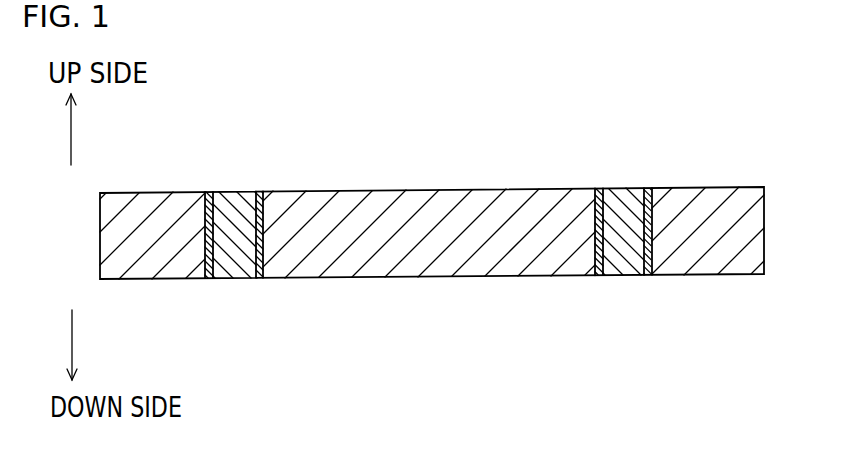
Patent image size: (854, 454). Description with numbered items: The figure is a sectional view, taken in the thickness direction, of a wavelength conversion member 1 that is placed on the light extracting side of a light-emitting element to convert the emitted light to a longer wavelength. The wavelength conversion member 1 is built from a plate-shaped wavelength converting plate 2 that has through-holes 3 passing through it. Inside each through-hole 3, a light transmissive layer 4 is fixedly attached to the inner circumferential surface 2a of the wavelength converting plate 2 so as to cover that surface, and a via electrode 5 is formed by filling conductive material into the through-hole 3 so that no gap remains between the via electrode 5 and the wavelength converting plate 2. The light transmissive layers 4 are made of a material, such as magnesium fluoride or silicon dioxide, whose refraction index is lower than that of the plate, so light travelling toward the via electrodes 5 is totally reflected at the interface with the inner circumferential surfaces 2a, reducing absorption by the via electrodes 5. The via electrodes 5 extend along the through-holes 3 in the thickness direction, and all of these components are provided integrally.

The wavelength conversion member 1 is at (719, 162).
The wavelength converting plate 2 is at (415, 195).
The inner circumferential surface 2a is at (207, 230).
The through-hole 3 is at (240, 186).
The light transmissive layer 4 is at (208, 280).
The via electrode 5 is at (233, 280).